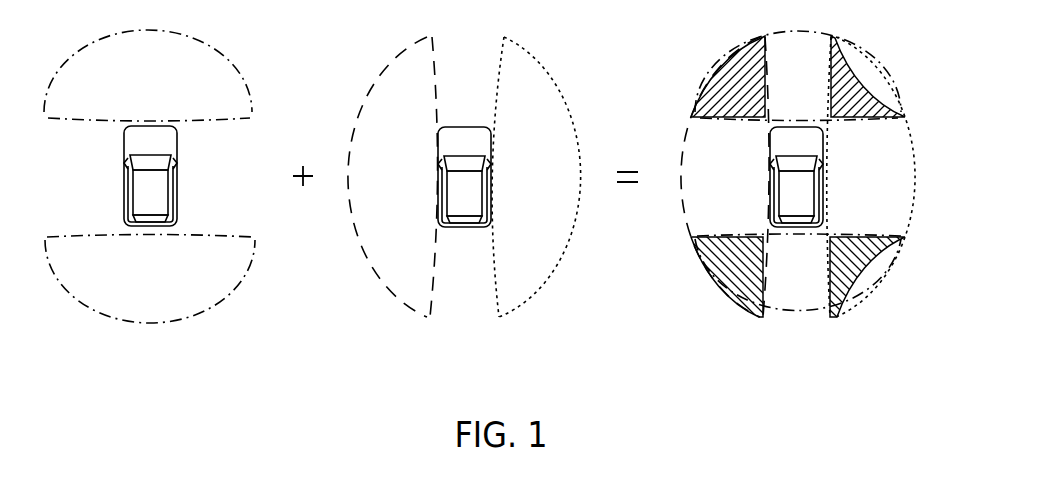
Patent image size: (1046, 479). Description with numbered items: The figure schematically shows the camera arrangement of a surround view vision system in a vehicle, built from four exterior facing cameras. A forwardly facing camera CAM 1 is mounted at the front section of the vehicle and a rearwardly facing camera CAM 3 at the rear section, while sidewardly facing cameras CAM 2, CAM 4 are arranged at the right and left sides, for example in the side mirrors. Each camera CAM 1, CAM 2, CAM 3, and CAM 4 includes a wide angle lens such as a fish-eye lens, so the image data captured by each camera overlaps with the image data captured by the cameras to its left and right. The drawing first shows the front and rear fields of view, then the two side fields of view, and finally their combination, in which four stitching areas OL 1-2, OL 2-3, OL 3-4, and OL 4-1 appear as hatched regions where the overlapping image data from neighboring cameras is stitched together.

The forwardly facing camera CAM 1 is at (472, 75).
The sidewardly facing camera CAM 2 is at (703, 177).
The rearwardly facing camera CAM 3 is at (473, 278).
The sidewardly facing camera CAM 4 is at (558, 177).
The stitching area OL 4-1 is at (737, 83).
The stitching area OL 1-2 is at (862, 82).
The stitching area OL 3-4 is at (733, 272).
The stitching area OL 2-3 is at (862, 272).